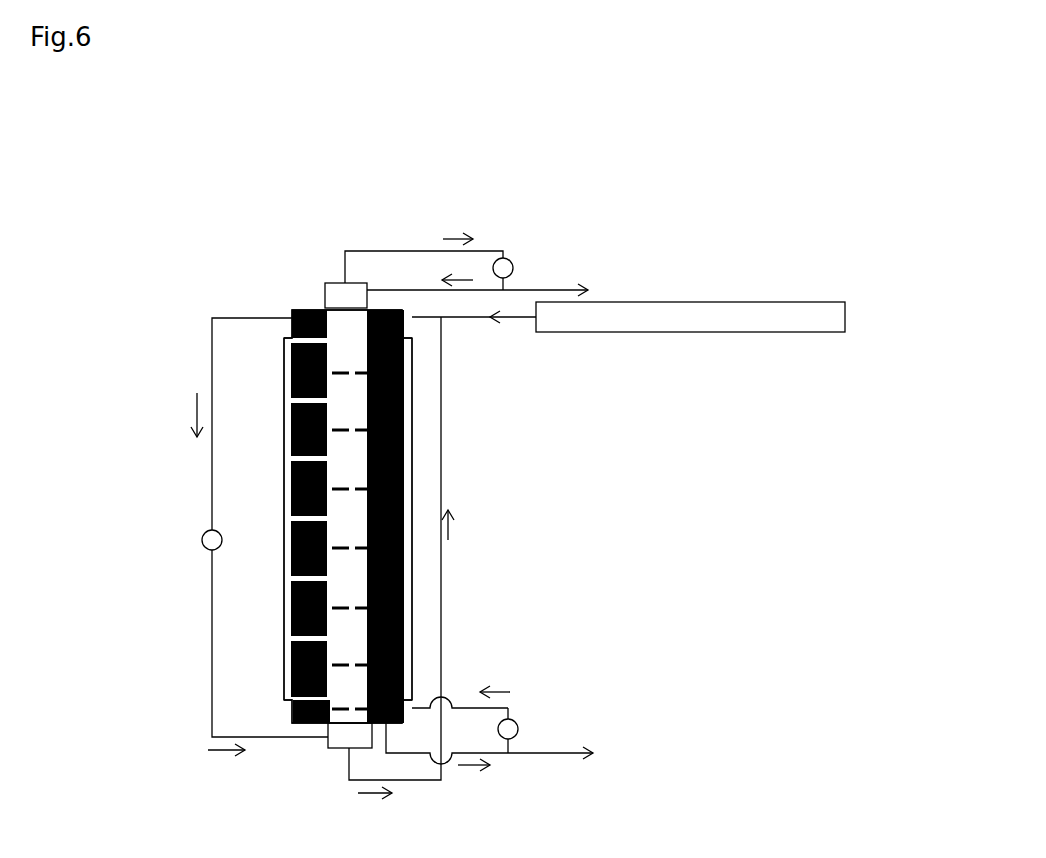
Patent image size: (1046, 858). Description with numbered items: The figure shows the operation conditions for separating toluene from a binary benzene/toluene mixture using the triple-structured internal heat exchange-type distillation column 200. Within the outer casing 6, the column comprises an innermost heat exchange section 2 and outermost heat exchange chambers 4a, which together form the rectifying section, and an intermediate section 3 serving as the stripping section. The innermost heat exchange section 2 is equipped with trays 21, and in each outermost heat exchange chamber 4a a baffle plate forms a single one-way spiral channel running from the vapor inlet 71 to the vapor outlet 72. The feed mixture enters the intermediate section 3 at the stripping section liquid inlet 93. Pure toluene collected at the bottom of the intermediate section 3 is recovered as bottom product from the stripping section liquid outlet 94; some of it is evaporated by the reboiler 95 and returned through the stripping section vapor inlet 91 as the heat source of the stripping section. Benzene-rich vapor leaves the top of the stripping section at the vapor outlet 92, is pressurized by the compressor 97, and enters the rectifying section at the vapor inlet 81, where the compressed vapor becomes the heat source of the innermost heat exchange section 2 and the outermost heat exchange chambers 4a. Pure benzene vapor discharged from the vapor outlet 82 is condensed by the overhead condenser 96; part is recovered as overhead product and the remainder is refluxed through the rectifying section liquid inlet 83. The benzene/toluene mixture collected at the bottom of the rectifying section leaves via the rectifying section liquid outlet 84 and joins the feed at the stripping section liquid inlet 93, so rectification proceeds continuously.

The innermost heat exchange section 2 is at (348, 500).
The intermediate section 3 is at (300, 448).
The outermost heat exchange chambers 4a is at (287, 383).
The outer casing 6 is at (287, 657).
The trays 21 is at (345, 370).
The vapor inlet 71 is at (327, 633).
The vapor outlet 72 is at (325, 580).
The vapor inlet 81 is at (328, 738).
The vapor outlet 82 is at (345, 283).
The rectifying section liquid inlet 83 is at (367, 287).
The rectifying section liquid outlet 84 is at (349, 752).
The stripping section vapor inlet 91 is at (418, 708).
The vapor outlet 92 is at (292, 310).
The stripping section liquid inlet 93 is at (402, 318).
The stripping section liquid outlet 94 is at (386, 723).
The reboiler 95 is at (518, 727).
The overhead condenser 96 is at (510, 260).
The compressor 97 is at (203, 533).
The triple-structured internal heat exchange-type distillation column 200 is at (577, 420).